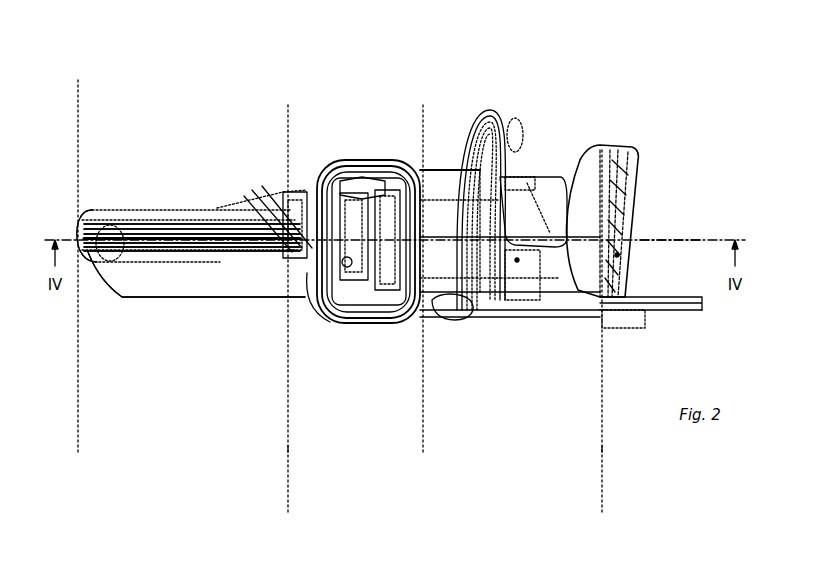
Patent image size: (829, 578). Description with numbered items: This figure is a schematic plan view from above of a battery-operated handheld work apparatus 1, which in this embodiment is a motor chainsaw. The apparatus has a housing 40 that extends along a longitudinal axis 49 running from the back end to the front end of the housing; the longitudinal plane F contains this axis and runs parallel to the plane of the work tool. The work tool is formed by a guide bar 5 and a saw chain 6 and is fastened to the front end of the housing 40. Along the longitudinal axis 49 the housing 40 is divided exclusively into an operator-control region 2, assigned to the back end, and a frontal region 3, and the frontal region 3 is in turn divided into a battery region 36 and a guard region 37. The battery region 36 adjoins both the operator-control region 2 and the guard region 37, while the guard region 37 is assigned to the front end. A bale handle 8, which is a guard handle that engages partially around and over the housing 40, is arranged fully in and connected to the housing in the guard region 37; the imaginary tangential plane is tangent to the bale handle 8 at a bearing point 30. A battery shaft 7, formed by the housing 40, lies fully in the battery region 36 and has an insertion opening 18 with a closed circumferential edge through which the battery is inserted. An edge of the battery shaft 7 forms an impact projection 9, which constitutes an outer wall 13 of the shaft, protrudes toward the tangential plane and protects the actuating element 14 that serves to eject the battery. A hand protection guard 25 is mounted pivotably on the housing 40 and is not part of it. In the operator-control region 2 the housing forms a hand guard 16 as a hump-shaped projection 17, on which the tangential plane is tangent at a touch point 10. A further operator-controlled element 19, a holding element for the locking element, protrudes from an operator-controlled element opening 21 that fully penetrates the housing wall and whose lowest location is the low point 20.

The handheld work apparatus 1 is at (190, 105).
The operator-control region 2 is at (78, 446).
The frontal region 3 is at (288, 505).
The guide bar 5 is at (645, 311).
The saw chain 6 is at (678, 309).
The battery shaft 7 is at (322, 182).
The bale handle 8 is at (487, 147).
The impact projection 9 is at (320, 183).
The outer wall 13 is at (215, 230).
The touch point 10 is at (300, 248).
The actuating element 14 is at (357, 200).
The hand guard 16 is at (178, 290).
The projection 17 is at (233, 260).
The insertion opening 18 is at (373, 167).
The further operator-controlled element 19 is at (137, 292).
The low point 20 is at (178, 290).
The operator-controlled element opening 21 is at (160, 228).
The hand protection guard 25 is at (600, 148).
The bearing point 30 is at (477, 203).
The battery region 36 is at (423, 446).
The guard region 37 is at (602, 446).
The housing 40 is at (305, 316).
The longitudinal axis 49 is at (668, 240).